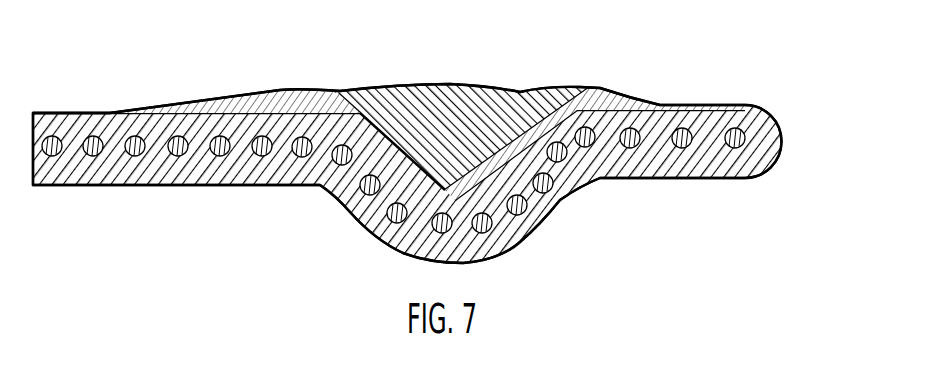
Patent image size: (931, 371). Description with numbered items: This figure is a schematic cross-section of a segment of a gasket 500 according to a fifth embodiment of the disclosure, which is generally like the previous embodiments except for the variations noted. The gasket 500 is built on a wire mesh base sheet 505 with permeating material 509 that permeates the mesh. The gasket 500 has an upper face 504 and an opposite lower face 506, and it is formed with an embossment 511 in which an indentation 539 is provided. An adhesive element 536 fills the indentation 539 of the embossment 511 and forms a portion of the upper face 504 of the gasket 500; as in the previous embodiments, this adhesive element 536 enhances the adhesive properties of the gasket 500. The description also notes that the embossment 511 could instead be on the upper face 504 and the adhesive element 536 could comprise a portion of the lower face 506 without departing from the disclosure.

The gasket 500 is at (711, 90).
The upper face 504 is at (117, 100).
The wire mesh base sheet 505 is at (731, 149).
The lower face 506 is at (170, 190).
The permeating material 509 is at (765, 133).
The embossment 511 is at (523, 235).
The adhesive element 536 is at (473, 95).
The indentation 539 is at (421, 177).